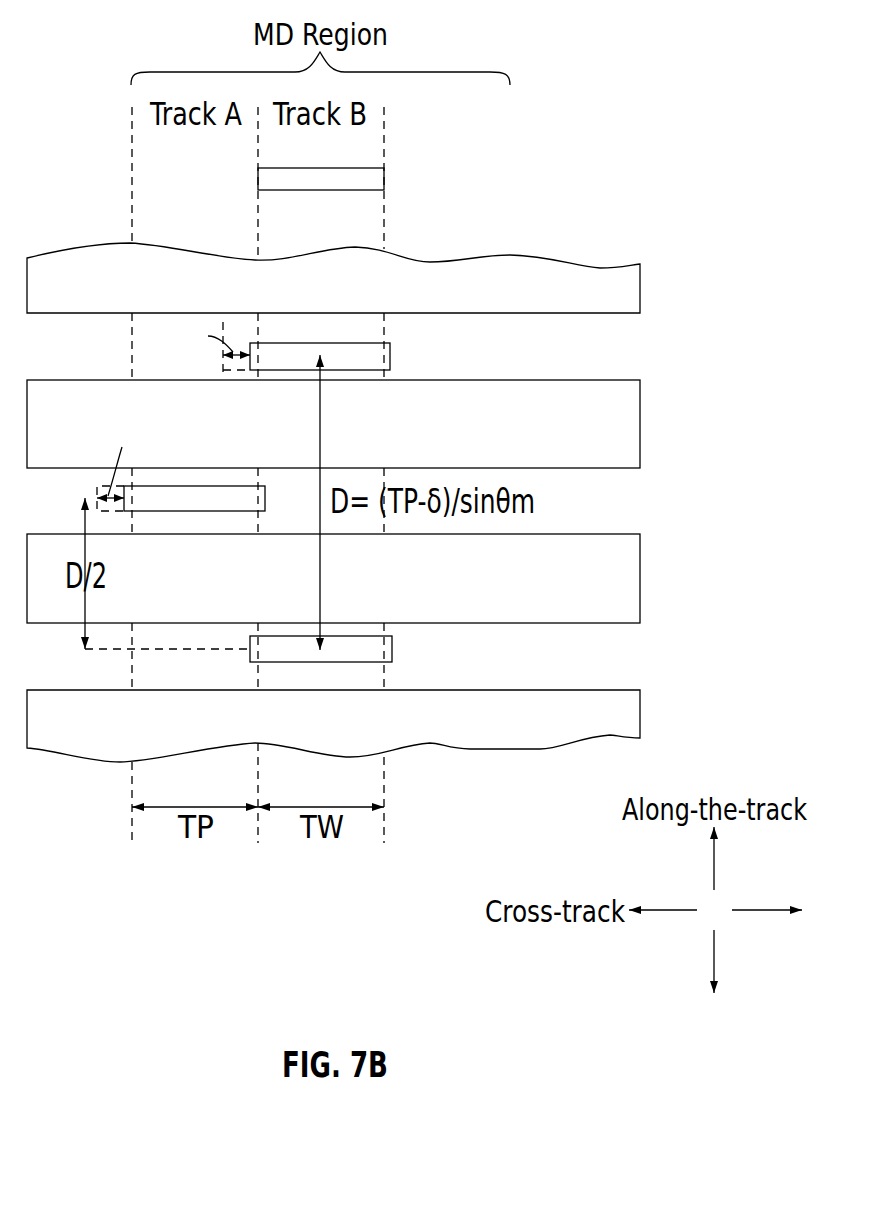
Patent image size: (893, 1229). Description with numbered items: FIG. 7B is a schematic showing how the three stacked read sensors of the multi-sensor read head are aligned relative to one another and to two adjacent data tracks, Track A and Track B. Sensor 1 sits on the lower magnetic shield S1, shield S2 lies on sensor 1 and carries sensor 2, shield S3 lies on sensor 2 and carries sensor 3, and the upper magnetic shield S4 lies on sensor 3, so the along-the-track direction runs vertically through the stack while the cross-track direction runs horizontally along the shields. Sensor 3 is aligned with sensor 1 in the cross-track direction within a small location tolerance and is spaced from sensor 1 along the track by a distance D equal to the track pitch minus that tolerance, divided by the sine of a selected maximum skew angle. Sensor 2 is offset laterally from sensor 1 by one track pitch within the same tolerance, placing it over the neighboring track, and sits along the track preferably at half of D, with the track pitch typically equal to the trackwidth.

The sensor 1 is at (394, 648).
The sensor 2 is at (267, 497).
The sensor 3 is at (392, 357).
The lower magnetic shield S1 is at (635, 720).
The magnetic shield S2 is at (635, 580).
The magnetic shield S3 is at (635, 425).
The upper magnetic shield S4 is at (635, 299).